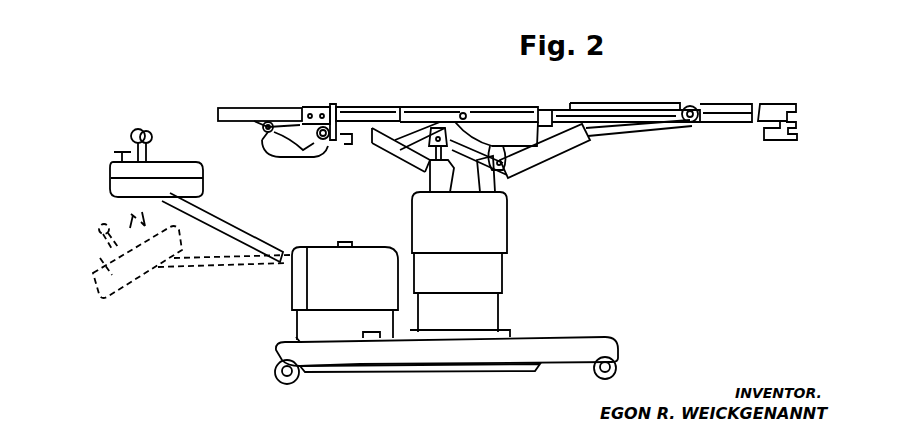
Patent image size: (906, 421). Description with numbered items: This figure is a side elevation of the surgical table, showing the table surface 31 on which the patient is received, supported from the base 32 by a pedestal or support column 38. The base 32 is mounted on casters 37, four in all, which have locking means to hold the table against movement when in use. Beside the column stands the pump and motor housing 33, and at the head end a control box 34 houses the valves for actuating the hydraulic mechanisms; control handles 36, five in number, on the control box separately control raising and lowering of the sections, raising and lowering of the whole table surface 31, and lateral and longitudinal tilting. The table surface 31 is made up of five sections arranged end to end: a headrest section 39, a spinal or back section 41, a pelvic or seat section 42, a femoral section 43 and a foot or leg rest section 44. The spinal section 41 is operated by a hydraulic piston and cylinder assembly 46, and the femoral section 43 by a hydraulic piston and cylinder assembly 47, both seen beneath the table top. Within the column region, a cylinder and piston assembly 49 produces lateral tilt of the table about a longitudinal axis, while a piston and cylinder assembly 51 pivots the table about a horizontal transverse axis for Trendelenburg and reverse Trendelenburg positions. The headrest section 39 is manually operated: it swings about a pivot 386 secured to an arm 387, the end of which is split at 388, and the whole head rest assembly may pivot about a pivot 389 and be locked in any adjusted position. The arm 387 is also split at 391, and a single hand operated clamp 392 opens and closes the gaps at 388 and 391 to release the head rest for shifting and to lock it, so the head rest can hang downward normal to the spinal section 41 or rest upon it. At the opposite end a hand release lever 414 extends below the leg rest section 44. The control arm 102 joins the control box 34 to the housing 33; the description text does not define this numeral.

The table surface 31 is at (458, 97).
The base 32 is at (532, 341).
The pump and motor housing 33 is at (255, 332).
The control box 34 is at (176, 148).
The control handles 36 is at (144, 131).
The casters 37 is at (298, 379).
The pedestal or support column 38 is at (516, 243).
The headrest section 39 is at (268, 108).
The spinal or back section 41 is at (364, 107).
The pelvic or seat section 42 is at (509, 108).
The femoral section 43 is at (641, 104).
The foot or leg rest section 44 is at (748, 104).
The hydraulic piston and cylinder assembly 46 is at (381, 153).
The hydraulic piston and cylinder assembly 47 is at (563, 152).
The cylinder and piston assembly 49 is at (440, 186).
The piston and cylinder assembly 51 is at (484, 184).
The control arm 102 is at (241, 223).
The pivot 386 is at (262, 130).
The arm 387 is at (314, 140).
The split end of arm 388 is at (279, 149).
The pivot 389 is at (321, 126).
The split in arm 391 is at (328, 141).
The hand operated clamp 392 is at (272, 152).
The hand release lever 414 is at (777, 139).